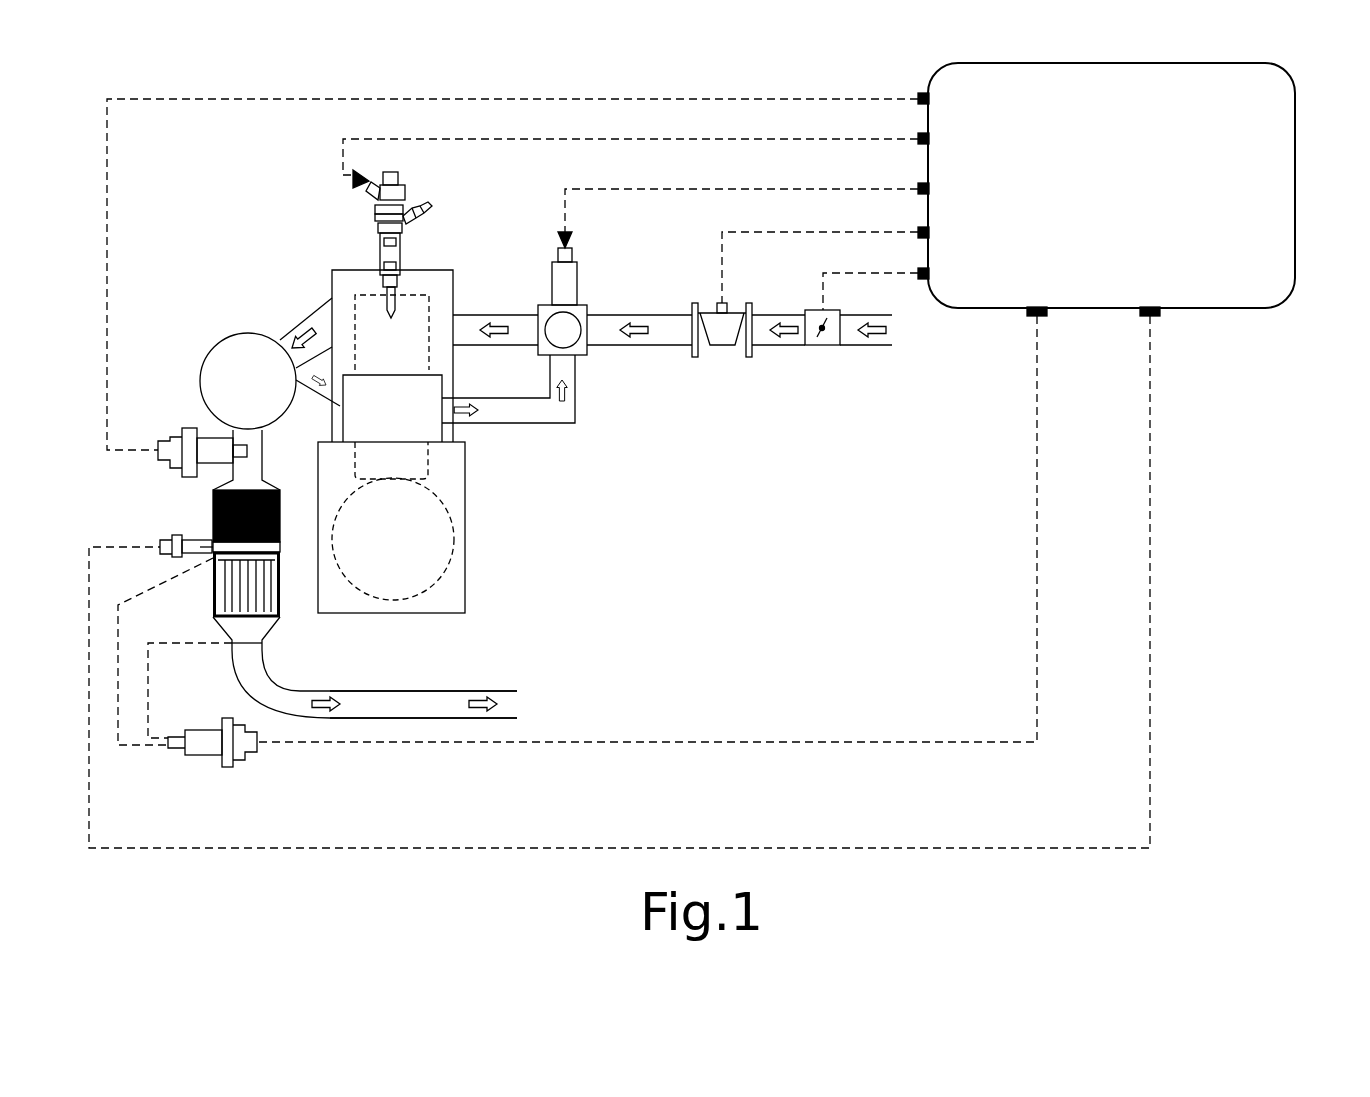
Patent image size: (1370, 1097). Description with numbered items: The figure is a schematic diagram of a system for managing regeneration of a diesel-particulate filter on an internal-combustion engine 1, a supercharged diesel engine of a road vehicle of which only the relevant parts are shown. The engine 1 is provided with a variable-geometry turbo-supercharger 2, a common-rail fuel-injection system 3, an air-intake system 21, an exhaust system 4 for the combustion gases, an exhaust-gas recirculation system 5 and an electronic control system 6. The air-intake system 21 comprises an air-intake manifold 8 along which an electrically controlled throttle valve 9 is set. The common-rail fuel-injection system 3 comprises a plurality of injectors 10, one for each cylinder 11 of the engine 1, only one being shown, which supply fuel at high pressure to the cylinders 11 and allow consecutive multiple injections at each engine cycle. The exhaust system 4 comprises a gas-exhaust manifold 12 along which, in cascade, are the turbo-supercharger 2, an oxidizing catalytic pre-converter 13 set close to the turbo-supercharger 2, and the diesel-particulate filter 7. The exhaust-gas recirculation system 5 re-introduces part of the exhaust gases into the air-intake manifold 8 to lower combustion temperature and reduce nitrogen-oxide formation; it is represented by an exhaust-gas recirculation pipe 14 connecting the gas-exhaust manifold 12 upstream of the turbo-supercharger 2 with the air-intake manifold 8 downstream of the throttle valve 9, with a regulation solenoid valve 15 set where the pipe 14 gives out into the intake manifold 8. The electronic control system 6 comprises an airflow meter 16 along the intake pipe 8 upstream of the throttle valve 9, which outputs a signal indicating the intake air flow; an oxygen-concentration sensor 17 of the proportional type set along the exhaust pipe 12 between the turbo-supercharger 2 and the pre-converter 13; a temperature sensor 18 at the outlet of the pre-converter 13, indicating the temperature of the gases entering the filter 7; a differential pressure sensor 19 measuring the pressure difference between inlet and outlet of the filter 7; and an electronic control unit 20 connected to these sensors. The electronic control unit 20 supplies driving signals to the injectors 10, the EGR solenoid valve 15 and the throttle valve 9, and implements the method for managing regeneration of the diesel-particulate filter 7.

The internal-combustion engine 1 is at (612, 548).
The turbo-supercharger 2 is at (222, 367).
The common-rail fuel-injection system 3 is at (352, 225).
The exhaust system 4 is at (298, 600).
The exhaust-gas recirculation system 5 is at (552, 452).
The electronic control system 6 is at (922, 432).
The diesel-particulate filter 7 is at (235, 592).
The air-intake manifold 8 is at (660, 335).
The throttle valve 9 is at (822, 345).
The injector 10 is at (410, 213).
The cylinder 11 is at (355, 295).
The gas-exhaust manifold 12 is at (405, 705).
The oxidizing catalytic pre-converter 13 is at (213, 512).
The exhaust-gas recirculation pipe 14 is at (493, 422).
The regulation solenoid valve 15 is at (585, 350).
The airflow meter 16 is at (717, 330).
The oxygen-concentration sensor 17 is at (177, 443).
The temperature sensor 18 is at (162, 540).
The differential pressure sensor 19 is at (217, 748).
The electronic control unit 20 is at (1270, 283).
The air-intake system 21 is at (777, 390).